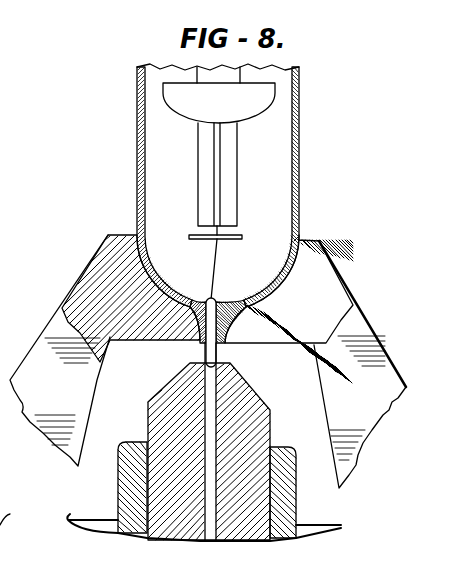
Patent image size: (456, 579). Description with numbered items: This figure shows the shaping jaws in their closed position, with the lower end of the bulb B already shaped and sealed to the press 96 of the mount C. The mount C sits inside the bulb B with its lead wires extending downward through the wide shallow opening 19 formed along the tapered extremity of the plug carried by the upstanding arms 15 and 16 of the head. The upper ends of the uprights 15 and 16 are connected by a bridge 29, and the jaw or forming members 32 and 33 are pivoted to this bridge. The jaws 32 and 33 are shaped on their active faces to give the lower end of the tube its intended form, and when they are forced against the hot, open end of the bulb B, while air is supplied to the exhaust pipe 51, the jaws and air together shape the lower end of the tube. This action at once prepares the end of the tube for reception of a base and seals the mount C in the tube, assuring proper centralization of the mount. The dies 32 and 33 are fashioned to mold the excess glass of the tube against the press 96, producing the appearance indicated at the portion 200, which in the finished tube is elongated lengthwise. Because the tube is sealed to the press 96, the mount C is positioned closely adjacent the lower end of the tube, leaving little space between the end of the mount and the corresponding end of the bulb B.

The bulb B is at (297, 112).
The mount C is at (225, 183).
The press 96 is at (213, 298).
The molded glass portion 200 is at (245, 342).
The jaw member 32 is at (45, 348).
The jaw member 33 is at (369, 342).
The opening 19 is at (203, 543).
The upstanding arm 16 is at (128, 485).
The upstanding arm 15 is at (288, 508).
The bridge 29 is at (82, 515).
The exhaust pipe 51 is at (0, 570).